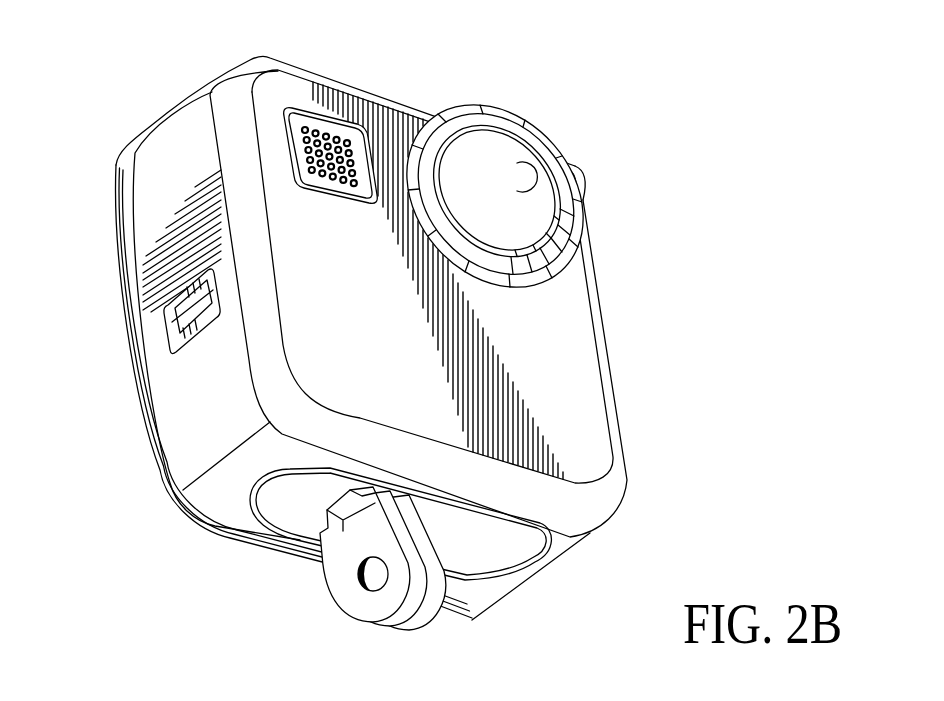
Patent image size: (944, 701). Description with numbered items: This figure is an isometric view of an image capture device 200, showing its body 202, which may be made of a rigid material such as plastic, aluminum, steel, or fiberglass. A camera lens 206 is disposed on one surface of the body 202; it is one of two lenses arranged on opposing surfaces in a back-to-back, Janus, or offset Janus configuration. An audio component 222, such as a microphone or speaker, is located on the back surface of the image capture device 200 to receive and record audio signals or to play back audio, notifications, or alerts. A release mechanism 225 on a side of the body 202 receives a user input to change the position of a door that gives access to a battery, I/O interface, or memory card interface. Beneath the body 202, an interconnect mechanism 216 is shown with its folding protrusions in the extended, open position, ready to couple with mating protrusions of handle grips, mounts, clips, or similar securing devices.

The image capture device 200 is at (402, 331).
The body 202 is at (612, 337).
The camera lens 206 is at (525, 180).
The interconnect mechanism 216 is at (348, 566).
The audio component 222 is at (306, 128).
The release mechanism 225 is at (170, 313).